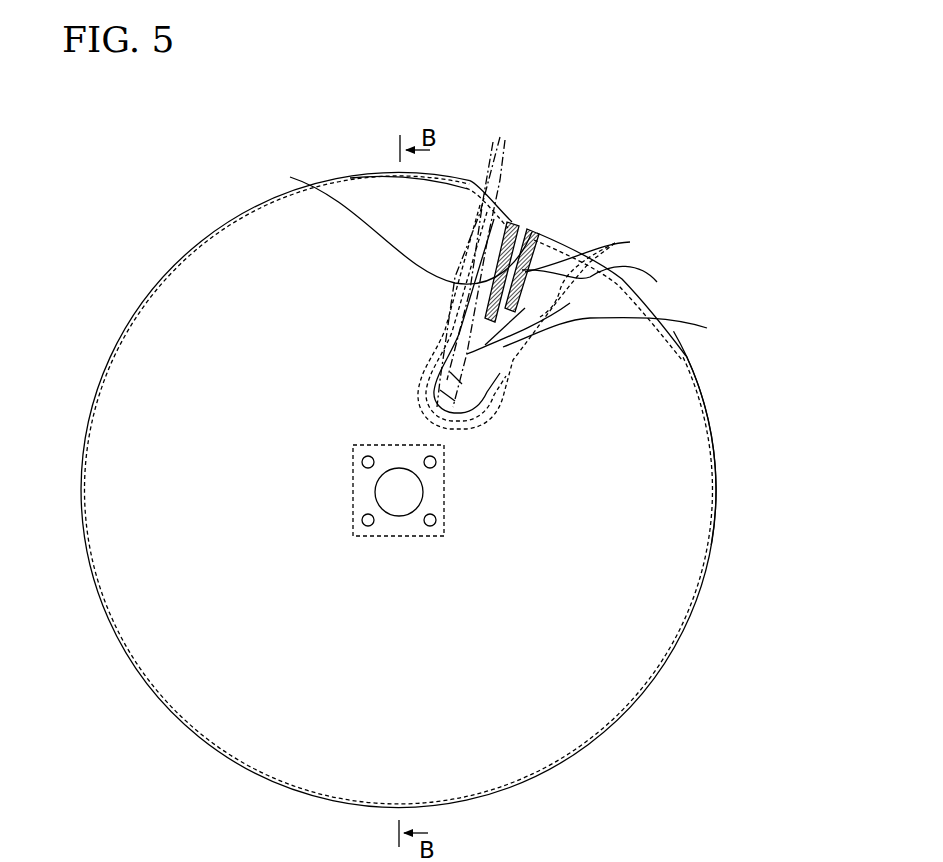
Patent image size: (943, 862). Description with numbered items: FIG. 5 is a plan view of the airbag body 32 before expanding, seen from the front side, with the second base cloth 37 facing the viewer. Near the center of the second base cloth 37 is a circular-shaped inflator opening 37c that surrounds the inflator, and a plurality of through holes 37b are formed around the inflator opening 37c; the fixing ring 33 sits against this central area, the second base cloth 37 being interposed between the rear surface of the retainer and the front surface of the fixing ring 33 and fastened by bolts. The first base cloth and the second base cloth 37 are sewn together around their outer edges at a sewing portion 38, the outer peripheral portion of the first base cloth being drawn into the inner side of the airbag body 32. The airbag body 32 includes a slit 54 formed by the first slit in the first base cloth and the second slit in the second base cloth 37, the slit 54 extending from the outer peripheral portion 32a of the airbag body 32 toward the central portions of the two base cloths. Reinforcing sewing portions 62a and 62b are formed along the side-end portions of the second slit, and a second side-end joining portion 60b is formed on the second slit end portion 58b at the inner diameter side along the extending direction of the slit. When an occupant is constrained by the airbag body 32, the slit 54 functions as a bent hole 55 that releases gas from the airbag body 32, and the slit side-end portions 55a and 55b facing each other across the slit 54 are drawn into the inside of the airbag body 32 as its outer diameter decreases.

The airbag body 32 is at (398, 452).
The outer peripheral portion 32a is at (705, 404).
The fixing ring 33 is at (447, 488).
The second base cloth 37 is at (545, 735).
The through holes 37b is at (365, 460).
The inflator opening 37c is at (425, 497).
The sewing portion 38 is at (606, 280).
The slit 54 is at (517, 228).
The bent hole 55 is at (540, 224).
The slit side-end portion 55a is at (610, 328).
The slit side-end portion 55b is at (387, 224).
The second slit end portion 58b is at (448, 369).
The second side-end joining portion 60b is at (449, 383).
The reinforcing sewing portion 62a is at (601, 274).
The reinforcing sewing portion 62b is at (480, 259).